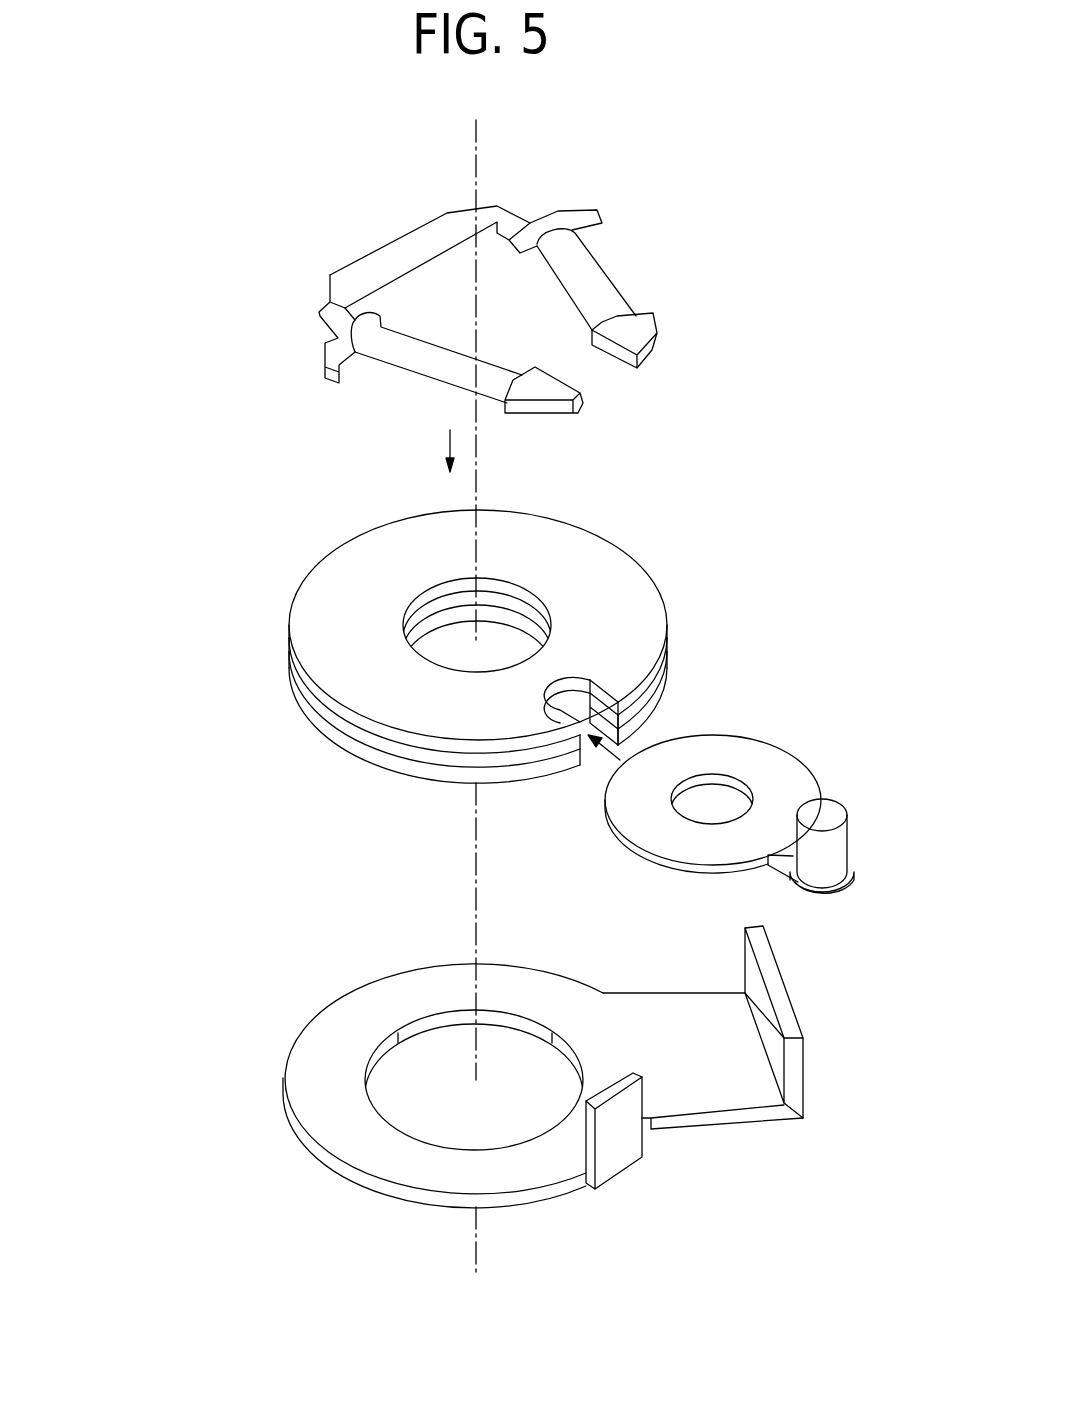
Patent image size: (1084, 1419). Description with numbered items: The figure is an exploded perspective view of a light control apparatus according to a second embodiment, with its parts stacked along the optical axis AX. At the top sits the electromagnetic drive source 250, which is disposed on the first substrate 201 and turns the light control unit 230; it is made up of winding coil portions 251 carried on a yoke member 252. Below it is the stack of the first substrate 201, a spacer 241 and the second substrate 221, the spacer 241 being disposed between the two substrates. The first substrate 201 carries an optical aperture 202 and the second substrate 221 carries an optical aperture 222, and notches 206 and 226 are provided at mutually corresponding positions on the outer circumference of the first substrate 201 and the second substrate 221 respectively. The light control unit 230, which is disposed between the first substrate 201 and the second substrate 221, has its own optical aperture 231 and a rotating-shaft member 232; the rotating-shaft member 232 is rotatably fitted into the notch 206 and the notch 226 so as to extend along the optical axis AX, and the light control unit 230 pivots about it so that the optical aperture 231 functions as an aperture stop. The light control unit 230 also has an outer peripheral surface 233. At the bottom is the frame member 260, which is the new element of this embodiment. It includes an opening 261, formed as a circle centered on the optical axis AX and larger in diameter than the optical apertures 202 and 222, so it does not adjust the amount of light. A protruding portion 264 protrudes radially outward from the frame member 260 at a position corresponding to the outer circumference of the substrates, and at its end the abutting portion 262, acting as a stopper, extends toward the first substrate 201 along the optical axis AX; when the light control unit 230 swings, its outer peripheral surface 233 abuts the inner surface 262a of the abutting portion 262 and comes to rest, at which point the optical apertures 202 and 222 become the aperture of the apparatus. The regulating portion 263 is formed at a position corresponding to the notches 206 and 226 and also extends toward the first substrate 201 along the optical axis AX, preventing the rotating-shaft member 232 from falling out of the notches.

The optical axis AX is at (480, 152).
The first substrate 201 is at (480, 611).
The optical aperture 202 is at (438, 597).
The notch 206 is at (597, 693).
The second substrate 221 is at (387, 757).
The optical aperture 222 is at (432, 625).
The notch 226 is at (585, 760).
The light control unit 230 is at (701, 809).
The optical aperture 231 is at (705, 785).
The rotating-shaft member 232 is at (776, 853).
The outer peripheral surface 233 is at (787, 748).
The spacer 241 is at (330, 715).
The electromagnetic drive source 250 is at (460, 281).
The winding coil portions 251 is at (448, 367).
The yoke member 252 is at (443, 227).
The frame member 260 is at (527, 1090).
The opening 261 is at (433, 1027).
The abutting portion 262 is at (761, 1036).
The inner surface 262a is at (756, 991).
The regulating portion 263 is at (616, 1154).
The protruding portion 264 is at (722, 1090).